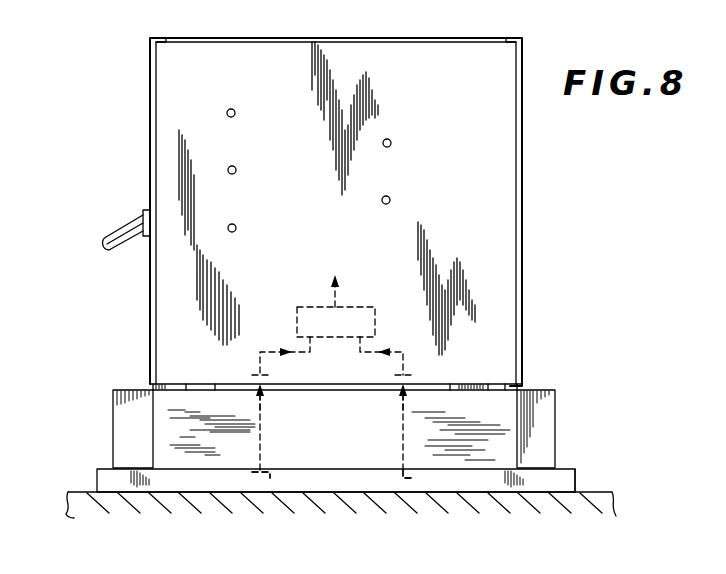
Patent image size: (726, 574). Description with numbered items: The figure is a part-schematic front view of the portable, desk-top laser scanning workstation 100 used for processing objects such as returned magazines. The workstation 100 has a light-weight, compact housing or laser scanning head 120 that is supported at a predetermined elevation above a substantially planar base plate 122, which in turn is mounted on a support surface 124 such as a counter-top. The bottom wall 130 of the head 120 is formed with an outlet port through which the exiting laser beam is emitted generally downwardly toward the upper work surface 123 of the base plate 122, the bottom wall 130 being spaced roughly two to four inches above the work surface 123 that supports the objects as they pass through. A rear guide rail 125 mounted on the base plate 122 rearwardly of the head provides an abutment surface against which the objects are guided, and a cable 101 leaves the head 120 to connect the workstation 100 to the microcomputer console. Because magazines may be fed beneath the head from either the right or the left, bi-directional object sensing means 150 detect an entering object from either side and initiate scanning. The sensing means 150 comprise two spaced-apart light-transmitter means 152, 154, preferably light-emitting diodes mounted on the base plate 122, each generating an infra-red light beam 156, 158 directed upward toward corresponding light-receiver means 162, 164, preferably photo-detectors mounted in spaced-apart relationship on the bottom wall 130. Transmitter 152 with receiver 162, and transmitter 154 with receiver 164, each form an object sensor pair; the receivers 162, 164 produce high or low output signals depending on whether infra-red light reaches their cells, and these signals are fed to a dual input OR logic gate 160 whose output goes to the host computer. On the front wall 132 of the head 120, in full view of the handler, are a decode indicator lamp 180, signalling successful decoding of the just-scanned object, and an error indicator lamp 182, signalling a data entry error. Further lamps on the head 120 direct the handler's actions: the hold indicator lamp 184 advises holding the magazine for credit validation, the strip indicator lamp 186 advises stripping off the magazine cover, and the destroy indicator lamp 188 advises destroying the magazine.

The laser scanning workstation 100 is at (558, 349).
The cable 101 is at (123, 232).
The laser scanning head 120 is at (534, 269).
The base plate 122 is at (584, 480).
The work surface 123 is at (566, 469).
The support surface 124 is at (600, 493).
The rear guide rail 125 is at (546, 417).
The bottom wall 130 is at (506, 380).
The front wall 132 is at (498, 290).
The bi-directional object sensing means 150 is at (224, 444).
The light-transmitter means 152 is at (254, 474).
The light-transmitter means 154 is at (414, 479).
The infra-red light beam 156 is at (265, 437).
The infra-red light beam 158 is at (402, 421).
The dual input OR logic gate 160 is at (372, 308).
The light-receiver means 162 is at (252, 374).
The light-receiver means 164 is at (414, 376).
The decode indicator lamp 180 is at (387, 205).
The error indicator lamp 182 is at (389, 139).
The hold indicator lamp 184 is at (232, 228).
The strip indicator lamp 186 is at (232, 171).
The destroy indicator lamp 188 is at (227, 114).